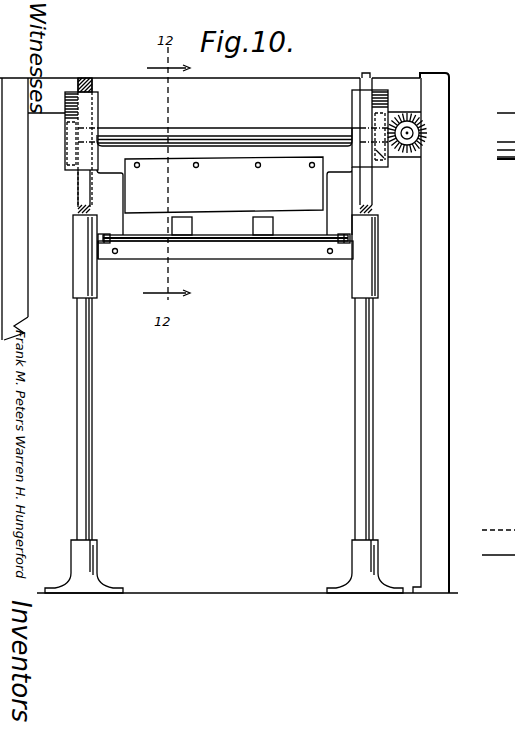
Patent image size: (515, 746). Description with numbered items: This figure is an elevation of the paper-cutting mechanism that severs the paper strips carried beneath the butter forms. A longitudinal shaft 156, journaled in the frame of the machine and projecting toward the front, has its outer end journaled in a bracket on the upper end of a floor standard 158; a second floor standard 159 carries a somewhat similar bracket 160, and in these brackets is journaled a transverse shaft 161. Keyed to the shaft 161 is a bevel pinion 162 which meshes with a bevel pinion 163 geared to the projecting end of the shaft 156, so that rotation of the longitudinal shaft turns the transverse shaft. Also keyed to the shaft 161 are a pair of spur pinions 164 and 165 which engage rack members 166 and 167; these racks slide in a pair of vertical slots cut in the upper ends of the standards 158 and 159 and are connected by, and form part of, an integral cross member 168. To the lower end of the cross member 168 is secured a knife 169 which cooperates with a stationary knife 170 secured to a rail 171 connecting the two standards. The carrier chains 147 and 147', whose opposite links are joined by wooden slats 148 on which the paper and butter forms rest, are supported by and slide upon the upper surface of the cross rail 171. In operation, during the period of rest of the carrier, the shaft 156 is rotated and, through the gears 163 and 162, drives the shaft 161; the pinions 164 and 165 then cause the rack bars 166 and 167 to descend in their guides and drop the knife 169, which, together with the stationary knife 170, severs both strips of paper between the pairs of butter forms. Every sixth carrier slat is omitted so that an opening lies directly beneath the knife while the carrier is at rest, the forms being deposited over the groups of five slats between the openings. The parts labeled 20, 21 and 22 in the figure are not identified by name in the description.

The frame 20 is at (448, 198).
The frame side member 21 is at (21, 233).
The frame top bar 22 is at (258, 82).
The chain 147 is at (112, 231).
The chain 147' is at (333, 230).
The wooden slats 148 is at (313, 237).
The longitudinal shaft 156 is at (424, 135).
The floor standard 158 is at (368, 275).
The floor standard 159 is at (77, 298).
The bracket 160 is at (93, 81).
The transverse shaft 161 is at (228, 133).
The bevel pinion 162 is at (394, 113).
The bevel pinion 163 is at (412, 130).
The spur pinion 164 is at (70, 157).
The spur pinion 165 is at (381, 152).
The rack member 166 is at (72, 92).
The rack member 167 is at (378, 90).
The cross member 168 is at (118, 148).
The knife 169 is at (224, 196).
The stationary knife 170 is at (257, 252).
The rail 171 is at (98, 260).